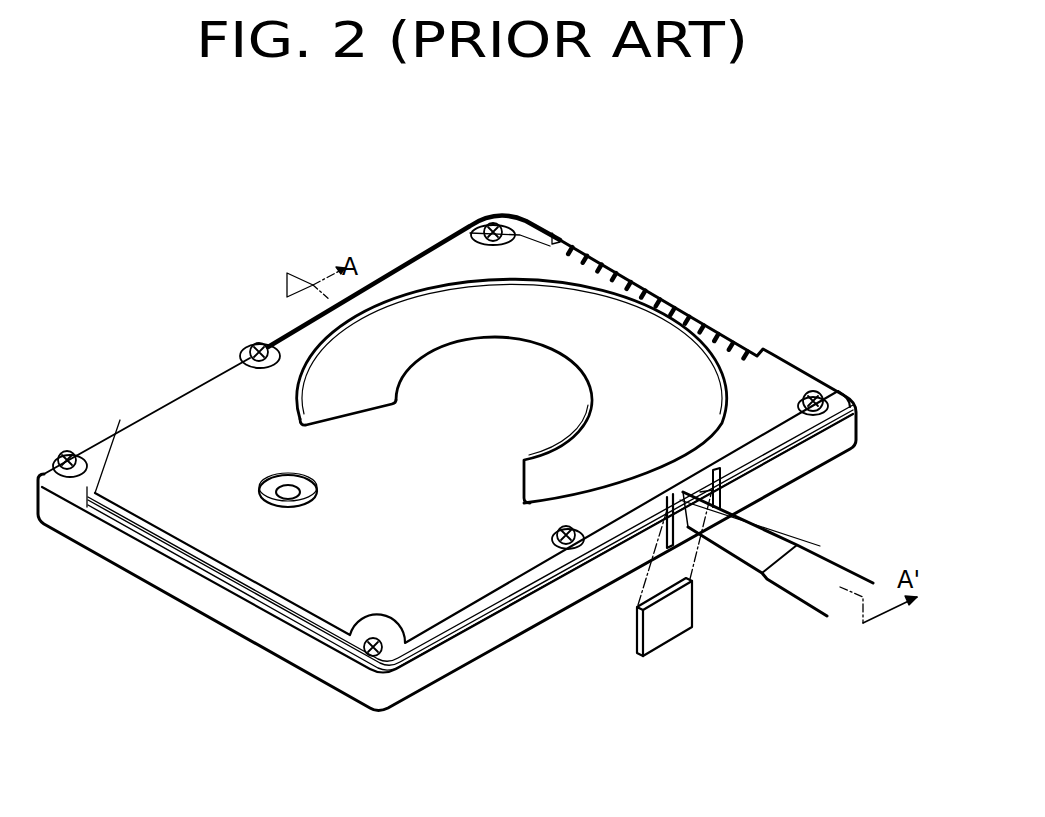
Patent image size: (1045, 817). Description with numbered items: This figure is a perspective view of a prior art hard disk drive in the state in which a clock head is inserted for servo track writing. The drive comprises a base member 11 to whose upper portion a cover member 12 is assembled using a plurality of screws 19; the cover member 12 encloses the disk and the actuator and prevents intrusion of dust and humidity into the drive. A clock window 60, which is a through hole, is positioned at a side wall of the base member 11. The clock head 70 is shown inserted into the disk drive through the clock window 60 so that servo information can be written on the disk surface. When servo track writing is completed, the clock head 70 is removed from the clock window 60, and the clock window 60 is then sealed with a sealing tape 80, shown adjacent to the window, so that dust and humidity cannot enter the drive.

The base member 11 is at (467, 650).
The cover member 12 is at (500, 597).
The screw 19 is at (260, 343).
The clock window 60 is at (722, 502).
The clock head 70 is at (836, 562).
The sealing tape 80 is at (657, 640).